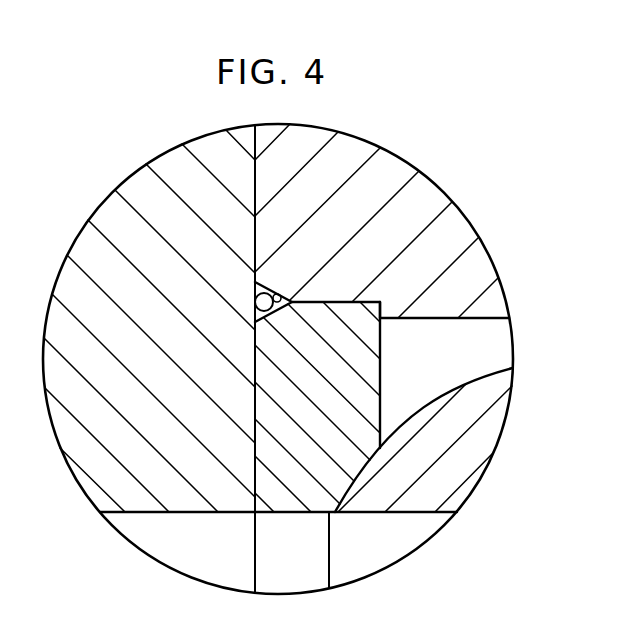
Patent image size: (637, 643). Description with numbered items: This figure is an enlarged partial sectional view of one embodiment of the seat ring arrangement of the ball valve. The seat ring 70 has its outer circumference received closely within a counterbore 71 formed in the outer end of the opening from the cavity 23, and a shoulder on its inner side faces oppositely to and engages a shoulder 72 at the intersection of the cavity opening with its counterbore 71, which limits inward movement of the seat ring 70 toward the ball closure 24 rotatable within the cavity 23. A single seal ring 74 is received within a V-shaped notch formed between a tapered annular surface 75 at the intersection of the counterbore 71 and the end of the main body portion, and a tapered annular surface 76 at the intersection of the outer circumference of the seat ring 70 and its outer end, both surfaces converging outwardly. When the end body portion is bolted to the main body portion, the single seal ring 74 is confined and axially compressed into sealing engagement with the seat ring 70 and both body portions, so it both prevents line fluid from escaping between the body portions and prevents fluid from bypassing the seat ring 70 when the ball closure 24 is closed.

The seal ring 70 is at (256, 383).
The counterbore 71 is at (324, 304).
The shoulder 72 is at (376, 320).
The single seal ring 74 is at (256, 300).
The tapered annular surface 75 is at (283, 295).
The tapered annular surface 76 is at (263, 314).
The cavity 23 is at (455, 318).
The ball closure 24 is at (482, 383).